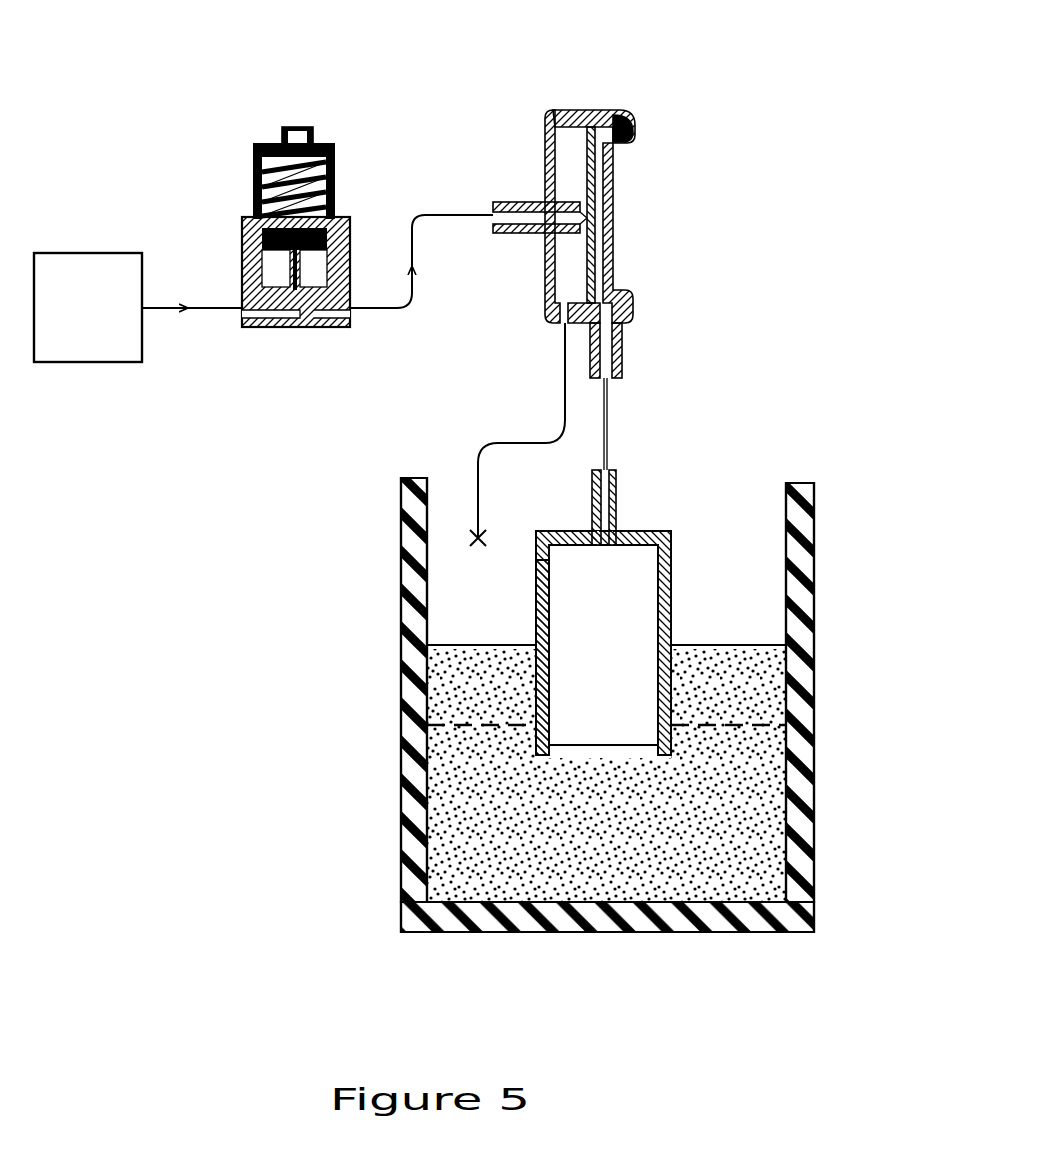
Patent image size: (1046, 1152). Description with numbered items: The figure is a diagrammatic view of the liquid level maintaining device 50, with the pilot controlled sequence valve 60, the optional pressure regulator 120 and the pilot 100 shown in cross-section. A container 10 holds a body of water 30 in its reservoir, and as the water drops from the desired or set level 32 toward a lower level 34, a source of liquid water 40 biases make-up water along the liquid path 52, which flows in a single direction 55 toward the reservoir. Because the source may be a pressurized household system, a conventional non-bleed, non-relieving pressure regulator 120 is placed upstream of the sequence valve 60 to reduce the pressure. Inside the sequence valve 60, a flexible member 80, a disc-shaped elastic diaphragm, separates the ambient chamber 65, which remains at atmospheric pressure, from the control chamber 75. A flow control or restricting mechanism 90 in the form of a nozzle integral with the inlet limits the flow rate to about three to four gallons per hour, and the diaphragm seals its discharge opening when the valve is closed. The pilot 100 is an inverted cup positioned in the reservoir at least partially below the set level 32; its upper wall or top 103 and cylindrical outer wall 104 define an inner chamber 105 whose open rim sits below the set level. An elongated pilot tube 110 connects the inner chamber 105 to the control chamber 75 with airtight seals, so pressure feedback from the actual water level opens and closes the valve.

The container 10 is at (417, 595).
The body of water 30 is at (650, 860).
The desired or set level 32 is at (690, 645).
The lower level 34 is at (725, 725).
The source of liquid water 40 is at (88, 307).
The liquid level maintaining device 50 is at (466, 112).
The liquid path 52 is at (210, 305).
The single direction 55 is at (415, 245).
The pilot controlled sequence valve 60 is at (610, 110).
The chamber 65 is at (570, 145).
The control chamber 75 is at (625, 117).
The flexible member 80 is at (594, 147).
The flow control or restricting mechanism 90 is at (590, 206).
The pilot 100 is at (643, 531).
The upper wall or top 103 is at (558, 533).
The cylindrical outer wall 104 is at (537, 603).
The inner chamber 105 is at (603, 645).
The pilot tube 110 is at (606, 422).
The pressure regulator 120 is at (329, 142).